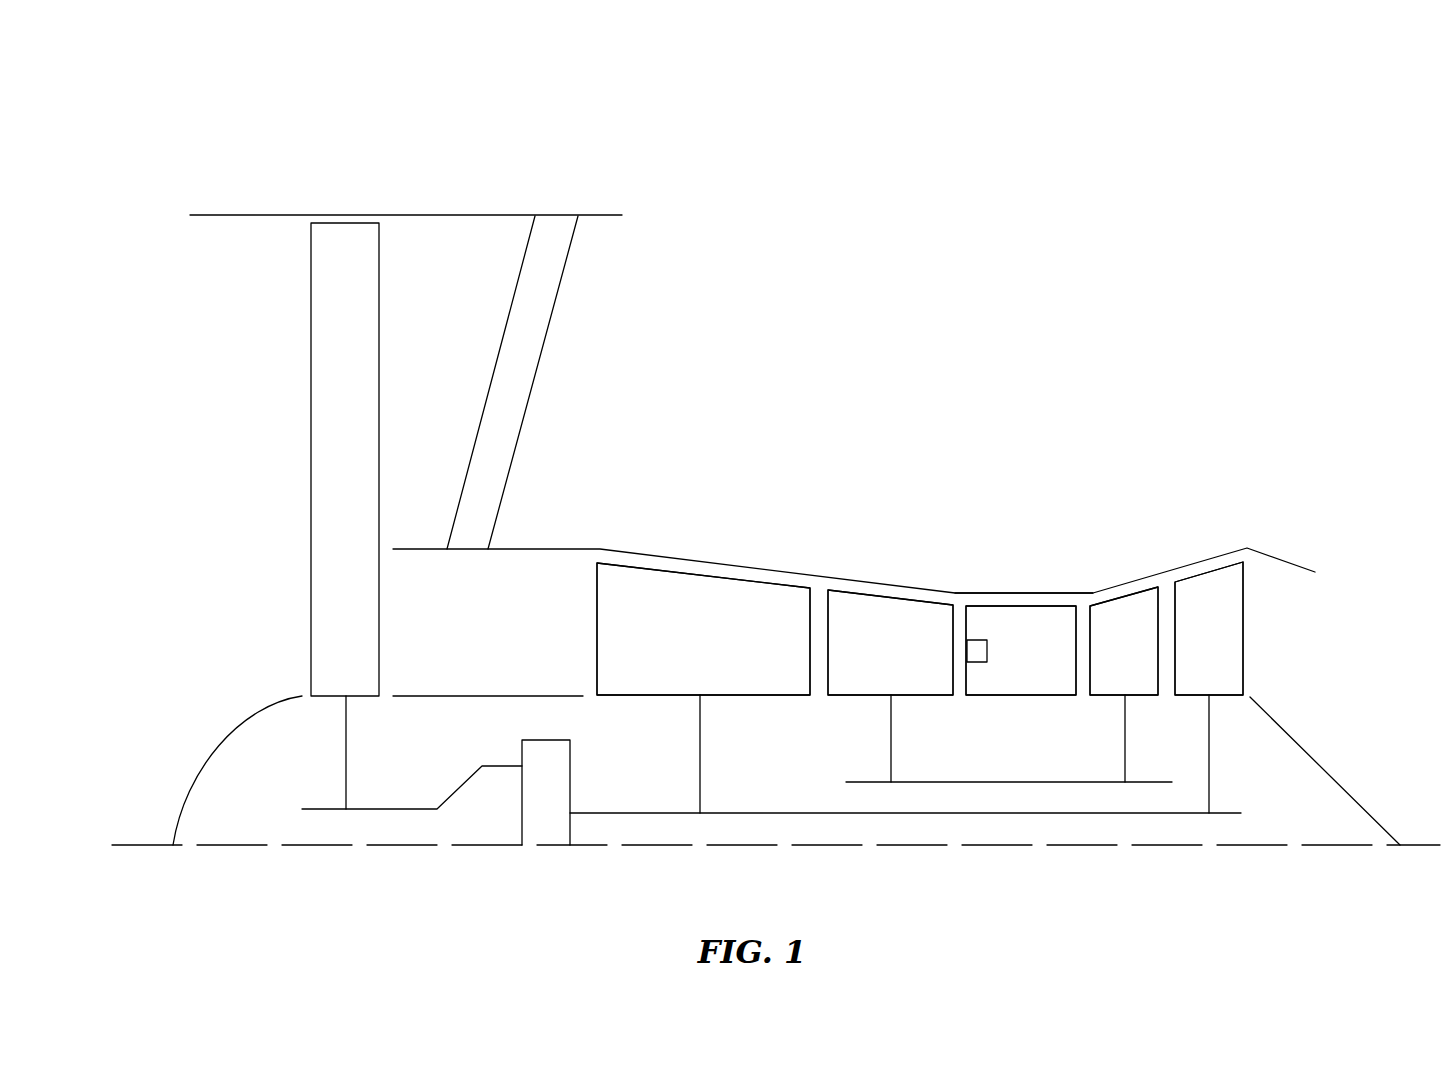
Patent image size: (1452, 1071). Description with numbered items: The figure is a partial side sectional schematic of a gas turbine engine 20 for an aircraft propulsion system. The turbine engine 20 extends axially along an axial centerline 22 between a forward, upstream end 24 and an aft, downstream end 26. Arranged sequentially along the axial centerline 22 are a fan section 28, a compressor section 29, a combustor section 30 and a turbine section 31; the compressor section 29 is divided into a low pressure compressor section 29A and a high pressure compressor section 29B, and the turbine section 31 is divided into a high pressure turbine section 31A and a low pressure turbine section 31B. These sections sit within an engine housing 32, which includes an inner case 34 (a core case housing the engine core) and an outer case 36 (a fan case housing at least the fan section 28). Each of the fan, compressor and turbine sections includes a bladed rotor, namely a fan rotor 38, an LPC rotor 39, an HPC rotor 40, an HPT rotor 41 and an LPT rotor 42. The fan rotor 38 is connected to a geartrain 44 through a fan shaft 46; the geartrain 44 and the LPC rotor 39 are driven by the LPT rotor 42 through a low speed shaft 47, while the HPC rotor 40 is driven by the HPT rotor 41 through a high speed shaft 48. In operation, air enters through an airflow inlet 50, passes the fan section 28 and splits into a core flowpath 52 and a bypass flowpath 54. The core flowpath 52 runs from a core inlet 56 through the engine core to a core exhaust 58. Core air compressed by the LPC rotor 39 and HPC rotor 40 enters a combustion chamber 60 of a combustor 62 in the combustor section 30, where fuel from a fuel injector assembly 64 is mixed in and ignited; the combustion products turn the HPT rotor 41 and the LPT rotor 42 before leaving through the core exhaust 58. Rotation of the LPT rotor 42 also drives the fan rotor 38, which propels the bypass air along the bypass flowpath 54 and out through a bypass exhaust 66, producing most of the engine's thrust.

The gas turbine engine 20 is at (144, 135).
The axial centerline 22 is at (125, 846).
The forward, upstream end 24 is at (190, 215).
The aft, downstream end 26 is at (1400, 845).
The fan section 28 is at (218, 198).
The compressor section 29 is at (953, 396).
The low pressure compressor section 29A is at (810, 483).
The high pressure compressor section 29B is at (953, 483).
The combustor section 30 is at (1075, 483).
The turbine section 31 is at (1243, 396).
The high pressure turbine section 31A is at (1090, 483).
The low pressure turbine section 31B is at (1173, 483).
The engine housing 32 is at (735, 212).
The inner case 34 is at (555, 527).
The outer case 36 is at (514, 212).
The fan rotor 38 is at (346, 752).
The LPC rotor 39 is at (700, 767).
The HPC rotor 40 is at (891, 728).
The HPT rotor 41 is at (1125, 728).
The LPT rotor 42 is at (1209, 755).
The geartrain 44 is at (560, 806).
The fan shaft 46 is at (390, 809).
The low speed shaft 47 is at (1153, 814).
The high speed shaft 48 is at (1020, 782).
The airflow inlet 50 is at (188, 408).
The core flowpath 52 is at (483, 644).
The bypass flowpath 54 is at (453, 371).
The core inlet 56 is at (404, 627).
The core exhaust 58 is at (1306, 652).
The combustion chamber 60 is at (1043, 664).
The combustor 62 is at (1062, 593).
The fuel injector assembly 64 is at (977, 640).
The bypass exhaust 66 is at (610, 292).